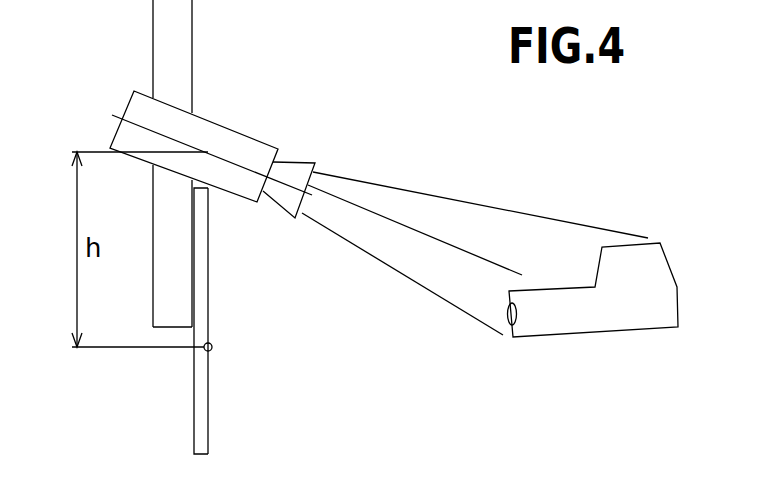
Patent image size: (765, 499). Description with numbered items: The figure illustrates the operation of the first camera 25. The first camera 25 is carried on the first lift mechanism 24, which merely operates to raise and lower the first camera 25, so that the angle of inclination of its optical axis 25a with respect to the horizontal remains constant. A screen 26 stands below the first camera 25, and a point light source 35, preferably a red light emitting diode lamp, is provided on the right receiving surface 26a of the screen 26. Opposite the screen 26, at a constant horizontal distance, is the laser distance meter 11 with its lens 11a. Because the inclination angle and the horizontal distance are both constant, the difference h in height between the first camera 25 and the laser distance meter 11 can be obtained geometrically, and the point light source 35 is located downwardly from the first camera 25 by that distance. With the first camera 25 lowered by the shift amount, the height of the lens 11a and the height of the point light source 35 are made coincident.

The laser distance meter 11 is at (592, 320).
The lens 11a is at (508, 313).
The first lift mechanism 24 is at (190, 23).
The first camera 25 is at (230, 140).
The optical axis 25a is at (415, 231).
The screen 26 is at (200, 405).
The right receiving surface 26a is at (210, 300).
The point light source 35 is at (212, 347).